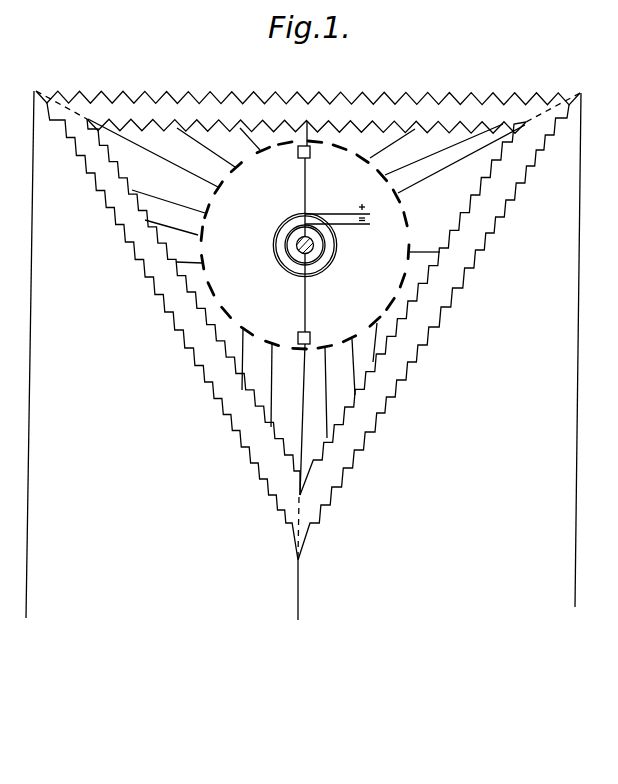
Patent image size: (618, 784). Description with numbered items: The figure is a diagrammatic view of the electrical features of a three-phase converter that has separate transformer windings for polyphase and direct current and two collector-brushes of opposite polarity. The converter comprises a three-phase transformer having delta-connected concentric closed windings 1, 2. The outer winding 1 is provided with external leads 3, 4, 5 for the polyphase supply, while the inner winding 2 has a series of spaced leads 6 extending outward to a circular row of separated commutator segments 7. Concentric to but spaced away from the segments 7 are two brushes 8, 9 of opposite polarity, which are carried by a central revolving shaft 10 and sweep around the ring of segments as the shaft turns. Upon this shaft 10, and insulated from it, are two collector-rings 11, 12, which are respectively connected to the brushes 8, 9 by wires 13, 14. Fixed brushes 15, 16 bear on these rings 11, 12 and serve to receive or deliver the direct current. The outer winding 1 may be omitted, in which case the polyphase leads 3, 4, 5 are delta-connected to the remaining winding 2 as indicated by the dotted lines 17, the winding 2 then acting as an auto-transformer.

The closed winding 1 is at (404, 380).
The closed winding 2 is at (385, 351).
The external lead 3 is at (33, 183).
The external lead 4 is at (578, 212).
The external lead 5 is at (300, 584).
The spaced leads 6 is at (204, 292).
The commutator segments 7 is at (243, 331).
The brush 8 is at (310, 153).
The brush 9 is at (310, 335).
The central revolving shaft 10 is at (299, 251).
The collector-ring 11 is at (282, 221).
The collector-ring 12 is at (286, 242).
The wire 13 is at (305, 184).
The wire 14 is at (305, 302).
The fixed brush 15 is at (352, 214).
The fixed brush 16 is at (342, 225).
The dotted lines 17 is at (78, 113).